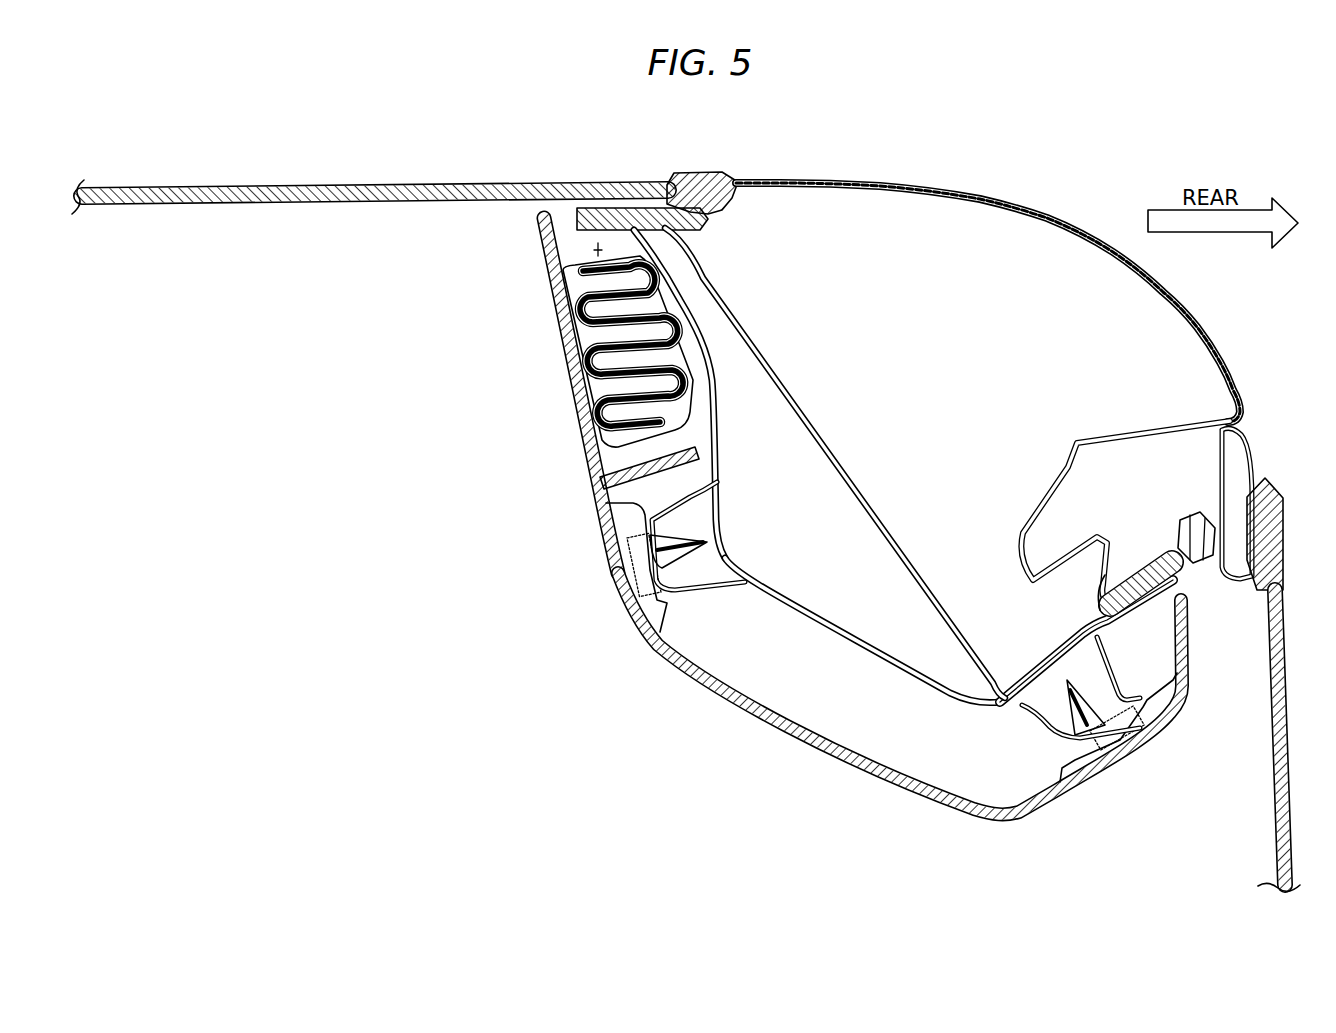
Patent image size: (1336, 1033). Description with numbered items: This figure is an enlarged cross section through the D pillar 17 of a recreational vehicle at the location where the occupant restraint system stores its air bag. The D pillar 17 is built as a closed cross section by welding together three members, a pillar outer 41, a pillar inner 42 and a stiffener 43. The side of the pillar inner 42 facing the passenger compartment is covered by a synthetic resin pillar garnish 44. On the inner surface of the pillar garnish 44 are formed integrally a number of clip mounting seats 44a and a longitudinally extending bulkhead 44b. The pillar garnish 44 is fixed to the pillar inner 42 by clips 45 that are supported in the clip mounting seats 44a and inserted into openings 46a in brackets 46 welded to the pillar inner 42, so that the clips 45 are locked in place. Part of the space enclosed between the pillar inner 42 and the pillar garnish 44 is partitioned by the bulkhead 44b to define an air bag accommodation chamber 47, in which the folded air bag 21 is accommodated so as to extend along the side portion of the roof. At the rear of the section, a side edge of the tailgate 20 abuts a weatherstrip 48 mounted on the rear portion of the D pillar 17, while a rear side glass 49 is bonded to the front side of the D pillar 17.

The D pillar 17 is at (1103, 226).
The tailgate 20 is at (1293, 593).
The air bag 21 is at (585, 345).
The pillar outer 41 is at (992, 191).
The pillar inner 42 is at (846, 627).
The stiffener 43 is at (862, 498).
The pillar garnish 44 is at (844, 511).
The clip mounting seat 44a is at (638, 590).
The bulkhead 44b is at (668, 458).
The clip 45 is at (708, 544).
The bracket 46 is at (717, 604).
The opening 46a is at (636, 560).
The air bag accommodation chamber 47 is at (695, 427).
The weatherstrip 48 is at (1187, 518).
The rear side glass 49 is at (372, 186).